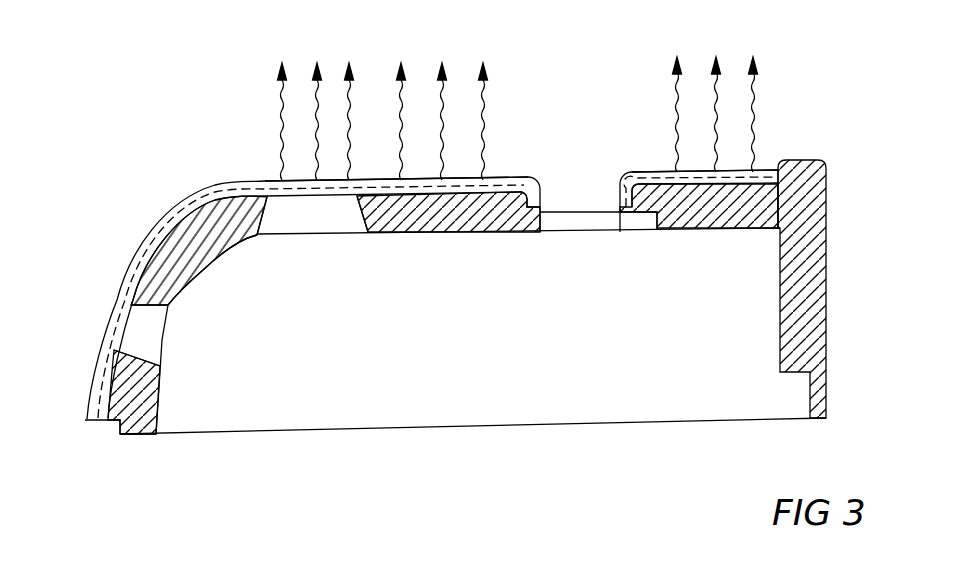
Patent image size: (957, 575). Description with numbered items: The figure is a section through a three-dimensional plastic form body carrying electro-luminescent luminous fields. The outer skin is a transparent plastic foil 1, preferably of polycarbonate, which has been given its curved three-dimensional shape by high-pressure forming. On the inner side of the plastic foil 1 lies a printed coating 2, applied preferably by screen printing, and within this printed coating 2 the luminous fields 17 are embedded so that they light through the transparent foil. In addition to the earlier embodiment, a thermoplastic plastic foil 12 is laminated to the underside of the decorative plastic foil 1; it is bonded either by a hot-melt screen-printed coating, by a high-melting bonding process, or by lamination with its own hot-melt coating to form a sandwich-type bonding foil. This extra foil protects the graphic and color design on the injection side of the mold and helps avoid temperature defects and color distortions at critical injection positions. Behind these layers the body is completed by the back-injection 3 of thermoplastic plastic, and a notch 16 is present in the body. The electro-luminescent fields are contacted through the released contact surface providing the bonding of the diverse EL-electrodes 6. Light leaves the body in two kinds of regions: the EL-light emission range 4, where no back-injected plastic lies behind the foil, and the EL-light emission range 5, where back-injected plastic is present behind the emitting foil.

The plastic foil 1 is at (85, 419).
The printed coating 2 is at (92, 421).
The back-injection 3 is at (137, 400).
The EL-light emission range 4 is at (316, 93).
The EL-light emission range 5 is at (577, 90).
The bonding of the diverse EL-electrodes 6 is at (125, 320).
The thermoplastic plastic foil 12 is at (137, 434).
The notch 16 is at (322, 217).
The luminous fields 17 is at (284, 179).